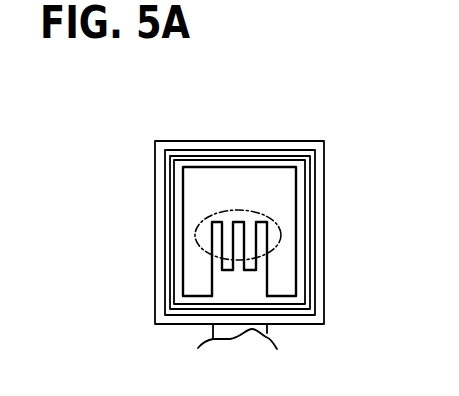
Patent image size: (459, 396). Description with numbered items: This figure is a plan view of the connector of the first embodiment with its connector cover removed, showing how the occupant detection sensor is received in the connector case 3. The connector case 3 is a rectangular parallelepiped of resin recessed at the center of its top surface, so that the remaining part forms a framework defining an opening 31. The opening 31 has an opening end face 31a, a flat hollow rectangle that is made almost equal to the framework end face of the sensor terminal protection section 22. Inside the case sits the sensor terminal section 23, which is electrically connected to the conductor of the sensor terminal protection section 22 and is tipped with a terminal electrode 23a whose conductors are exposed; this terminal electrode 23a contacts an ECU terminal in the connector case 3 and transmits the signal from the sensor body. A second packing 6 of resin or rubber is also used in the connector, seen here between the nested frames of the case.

The connector case 3 is at (155, 287).
The second packing 6 is at (170, 243).
The sensor terminal protection section 22 is at (178, 195).
The sensor terminal section 23 is at (247, 283).
The terminal electrode 23a is at (268, 216).
The opening 31 is at (233, 182).
The opening end face 31a is at (180, 145).